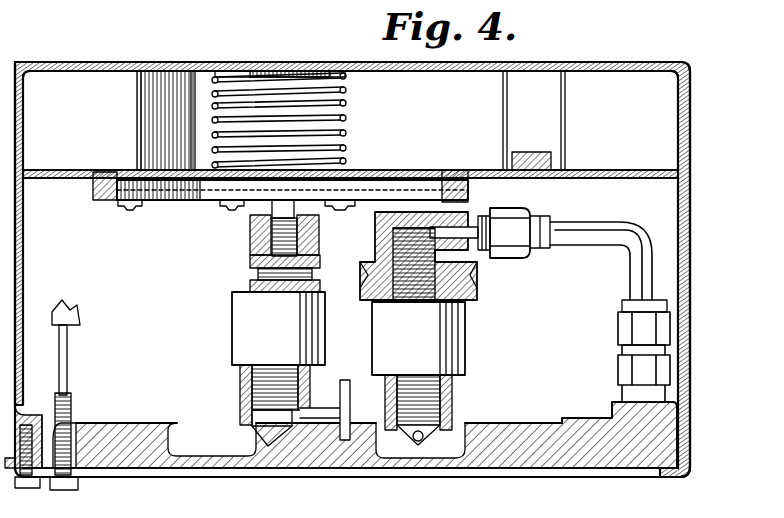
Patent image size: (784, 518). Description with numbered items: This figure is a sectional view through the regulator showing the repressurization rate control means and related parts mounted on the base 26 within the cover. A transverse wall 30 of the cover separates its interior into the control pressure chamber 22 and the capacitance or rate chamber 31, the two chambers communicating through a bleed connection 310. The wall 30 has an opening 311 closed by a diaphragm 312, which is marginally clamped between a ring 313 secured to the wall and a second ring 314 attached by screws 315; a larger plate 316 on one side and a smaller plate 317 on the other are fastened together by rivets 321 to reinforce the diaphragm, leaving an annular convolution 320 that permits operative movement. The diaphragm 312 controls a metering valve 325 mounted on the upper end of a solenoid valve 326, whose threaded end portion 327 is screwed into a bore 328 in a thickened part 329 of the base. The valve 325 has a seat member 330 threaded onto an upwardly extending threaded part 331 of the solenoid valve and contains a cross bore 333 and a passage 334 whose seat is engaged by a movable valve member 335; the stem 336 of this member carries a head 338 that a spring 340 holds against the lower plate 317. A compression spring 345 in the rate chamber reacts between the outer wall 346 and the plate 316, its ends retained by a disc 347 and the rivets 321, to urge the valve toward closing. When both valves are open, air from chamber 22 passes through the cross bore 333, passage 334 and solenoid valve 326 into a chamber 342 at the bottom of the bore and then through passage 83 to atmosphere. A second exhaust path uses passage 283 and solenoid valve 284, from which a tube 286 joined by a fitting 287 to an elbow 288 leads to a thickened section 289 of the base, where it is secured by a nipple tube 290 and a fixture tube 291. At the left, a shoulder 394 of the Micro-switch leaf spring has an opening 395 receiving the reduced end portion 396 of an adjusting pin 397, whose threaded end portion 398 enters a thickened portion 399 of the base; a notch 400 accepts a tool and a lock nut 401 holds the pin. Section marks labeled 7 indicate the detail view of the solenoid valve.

The control pressure chamber 22 is at (530, 323).
The base 26 is at (222, 475).
The transverse wall 30 is at (74, 170).
The capacitance or rate chamber 31 is at (90, 106).
The passage 83 is at (330, 418).
The passage 283 is at (475, 270).
The solenoid valve 284 is at (468, 346).
The tube 286 is at (598, 230).
The fitting 287 is at (530, 212).
The elbow 288 is at (476, 220).
The thickened section 289 is at (663, 420).
The nipple tube 290 is at (620, 380).
The fixture tube 291 is at (625, 333).
The bleed connection 310 is at (532, 150).
The opening 311 is at (123, 170).
The diaphragm 312 is at (178, 200).
The ring 313 is at (466, 185).
The ring 314 is at (95, 190).
The screws 315 is at (120, 208).
The plate 316 is at (400, 195).
The plate 317 is at (340, 208).
The annular convolution 320 is at (135, 170).
The rivets 321 is at (352, 195).
The metering valve 325 is at (243, 239).
The solenoid valve 326 is at (236, 340).
The threaded end portion 327 is at (250, 385).
The bore 328 is at (250, 425).
The thickened part 329 is at (251, 430).
The seat member 330 is at (250, 272).
The threaded part 331 is at (250, 286).
The cross bore 333 is at (300, 262).
The passage 334 is at (300, 242).
The movable valve member 335 is at (258, 262).
The stem 336 is at (250, 248).
The head 338 is at (248, 208).
The spring 340 is at (292, 212).
The chamber 342 is at (287, 428).
The compression spring 345 is at (348, 118).
The outer wall 346 is at (478, 73).
The disc 347 is at (322, 68).
The shoulder 394 is at (58, 325).
The opening 395 is at (80, 322).
The reduced end portion 396 is at (55, 310).
The adjusting pin 397 is at (58, 372).
The threaded end portion 398 is at (105, 475).
The thickened portion 399 is at (165, 475).
The notch 400 is at (65, 490).
The lock nut 401 is at (32, 490).
The section line 7 is at (305, 287).